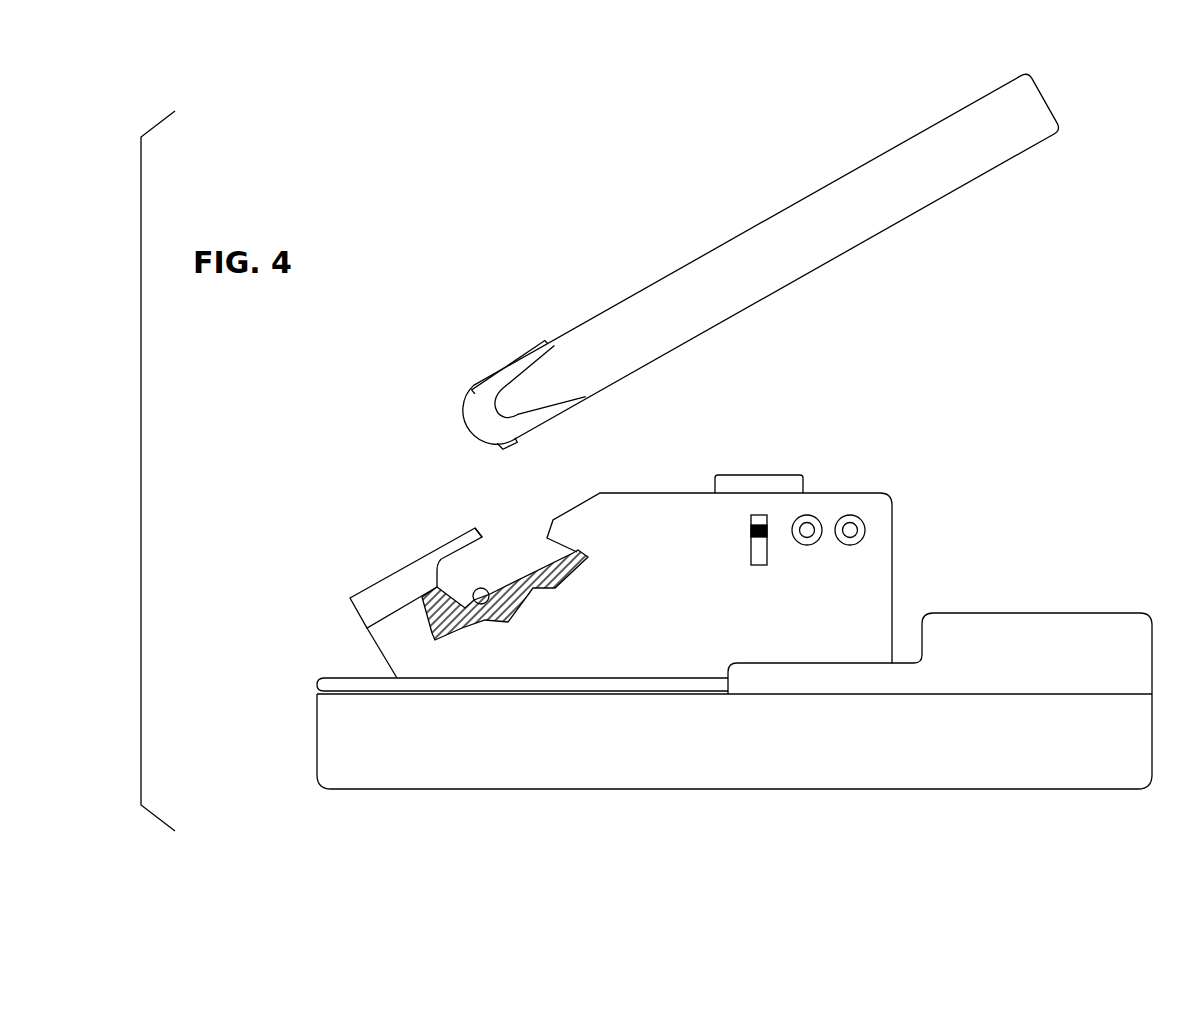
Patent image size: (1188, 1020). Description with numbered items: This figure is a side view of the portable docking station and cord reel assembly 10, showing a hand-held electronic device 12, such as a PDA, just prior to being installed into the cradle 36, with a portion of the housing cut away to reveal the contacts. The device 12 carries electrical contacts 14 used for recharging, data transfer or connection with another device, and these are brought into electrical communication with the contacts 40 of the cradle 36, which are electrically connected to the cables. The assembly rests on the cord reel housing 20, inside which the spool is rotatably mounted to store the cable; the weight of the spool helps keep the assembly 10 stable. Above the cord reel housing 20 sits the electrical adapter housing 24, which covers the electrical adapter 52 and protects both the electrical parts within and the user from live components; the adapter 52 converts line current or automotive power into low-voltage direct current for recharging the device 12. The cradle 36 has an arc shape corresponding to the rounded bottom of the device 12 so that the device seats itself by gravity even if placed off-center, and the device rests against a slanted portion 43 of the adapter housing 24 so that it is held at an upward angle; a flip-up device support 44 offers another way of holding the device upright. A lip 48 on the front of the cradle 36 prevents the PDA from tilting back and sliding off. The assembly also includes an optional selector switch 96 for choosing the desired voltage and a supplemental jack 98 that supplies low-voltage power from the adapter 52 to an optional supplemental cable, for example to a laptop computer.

The portable docking station and cord reel assembly 10 is at (1033, 515).
The hand-held electronic device 12 is at (905, 228).
The electrical contacts 14 is at (510, 440).
The cord reel housing 20 is at (1072, 745).
The electrical adapter housing 24 is at (638, 535).
The cradle 36 is at (452, 570).
The contacts 40 is at (481, 597).
The slanted portion 43 is at (548, 565).
The flip-up device support 44 is at (785, 485).
The lip 48 is at (463, 535).
The electrical adapter 52 is at (668, 630).
The selector switch 96 is at (760, 515).
The supplemental jack 98 is at (853, 517).